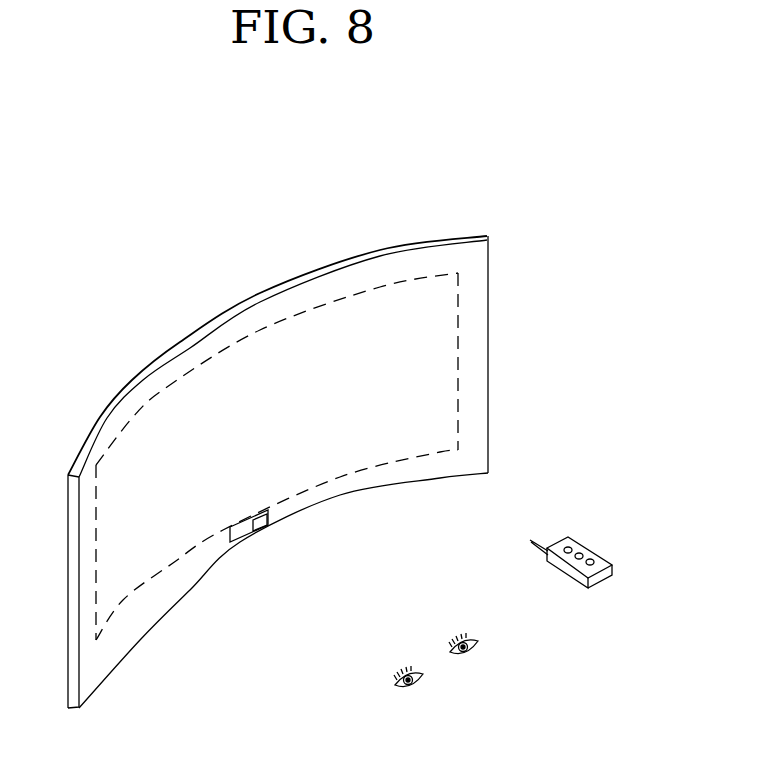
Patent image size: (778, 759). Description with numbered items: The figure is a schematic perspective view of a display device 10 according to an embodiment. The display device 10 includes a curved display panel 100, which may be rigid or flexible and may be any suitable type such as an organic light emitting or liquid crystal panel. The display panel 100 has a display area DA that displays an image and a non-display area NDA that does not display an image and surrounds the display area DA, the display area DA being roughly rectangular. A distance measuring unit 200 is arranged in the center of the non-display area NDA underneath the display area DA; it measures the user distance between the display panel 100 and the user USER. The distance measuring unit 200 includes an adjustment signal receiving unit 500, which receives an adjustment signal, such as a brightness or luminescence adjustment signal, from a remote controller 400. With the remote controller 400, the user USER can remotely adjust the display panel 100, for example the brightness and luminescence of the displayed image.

The display device 10 is at (590, 195).
The display panel 100 is at (572, 325).
The distance measuring unit 200 is at (230, 542).
The remote controller 400 is at (592, 549).
The adjustment signal receiving unit 500 is at (262, 530).
The display area DA is at (447, 332).
The non-display area NDA is at (474, 387).
The user USER is at (468, 632).